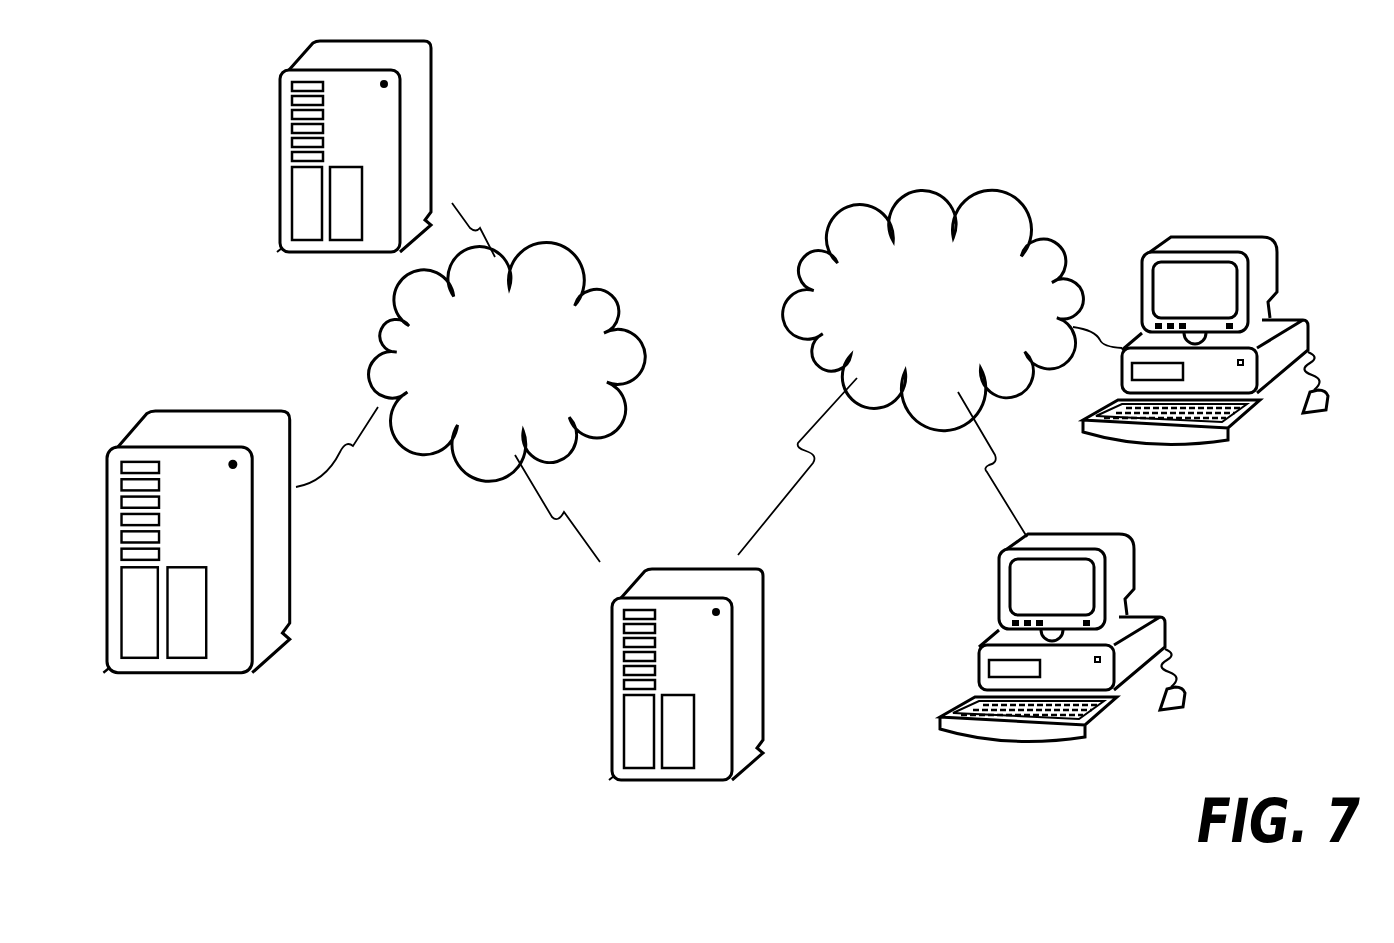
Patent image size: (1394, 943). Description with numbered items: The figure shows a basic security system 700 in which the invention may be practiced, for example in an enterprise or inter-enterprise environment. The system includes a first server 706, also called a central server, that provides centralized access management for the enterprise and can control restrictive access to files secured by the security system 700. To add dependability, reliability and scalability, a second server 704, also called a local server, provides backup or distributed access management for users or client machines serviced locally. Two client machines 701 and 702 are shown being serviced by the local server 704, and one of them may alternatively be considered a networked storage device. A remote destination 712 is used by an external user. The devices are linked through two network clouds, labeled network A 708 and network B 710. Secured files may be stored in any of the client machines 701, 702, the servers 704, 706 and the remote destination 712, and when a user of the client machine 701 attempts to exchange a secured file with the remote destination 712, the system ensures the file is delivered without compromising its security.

The security system 700 is at (213, 100).
The client machine 701 is at (1157, 617).
The client machine 702 is at (1300, 320).
The second server 704 is at (667, 568).
The first server 706 is at (203, 418).
The network A 708 is at (582, 290).
The network B 710 is at (967, 233).
The remote destination 712 is at (428, 137).